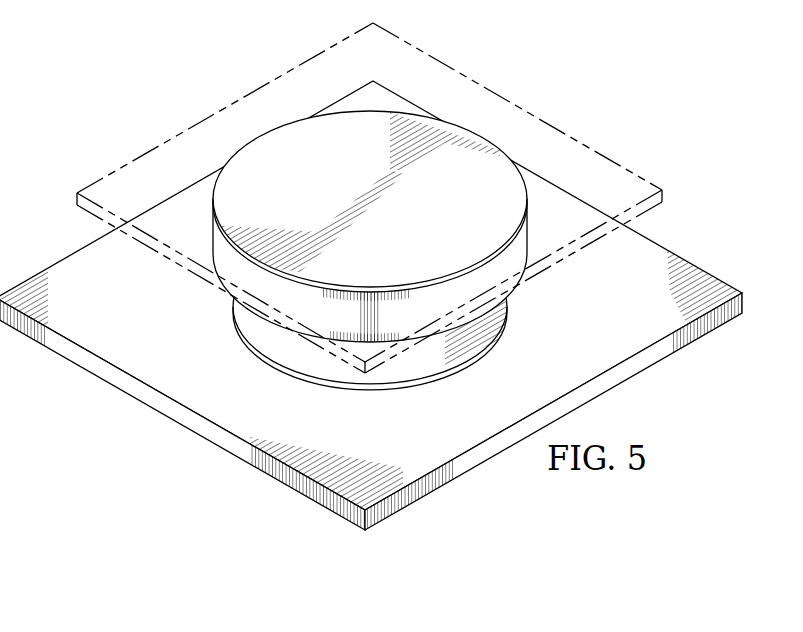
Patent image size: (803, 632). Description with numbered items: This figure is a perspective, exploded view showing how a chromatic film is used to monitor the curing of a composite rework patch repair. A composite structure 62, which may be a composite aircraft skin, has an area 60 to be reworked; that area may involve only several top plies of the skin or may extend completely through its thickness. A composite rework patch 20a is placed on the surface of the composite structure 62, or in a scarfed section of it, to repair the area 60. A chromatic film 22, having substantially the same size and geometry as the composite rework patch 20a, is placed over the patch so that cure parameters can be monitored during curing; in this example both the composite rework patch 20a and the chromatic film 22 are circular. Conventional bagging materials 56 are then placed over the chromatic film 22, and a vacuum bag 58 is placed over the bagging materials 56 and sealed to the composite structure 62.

The composite structure 62 is at (73, 267).
The vacuum bag 58 is at (518, 105).
The bagging materials 56 is at (515, 200).
The chromatic film 22 is at (225, 253).
The composite rework patch 20a is at (282, 352).
The area to be reworked 60 is at (424, 399).